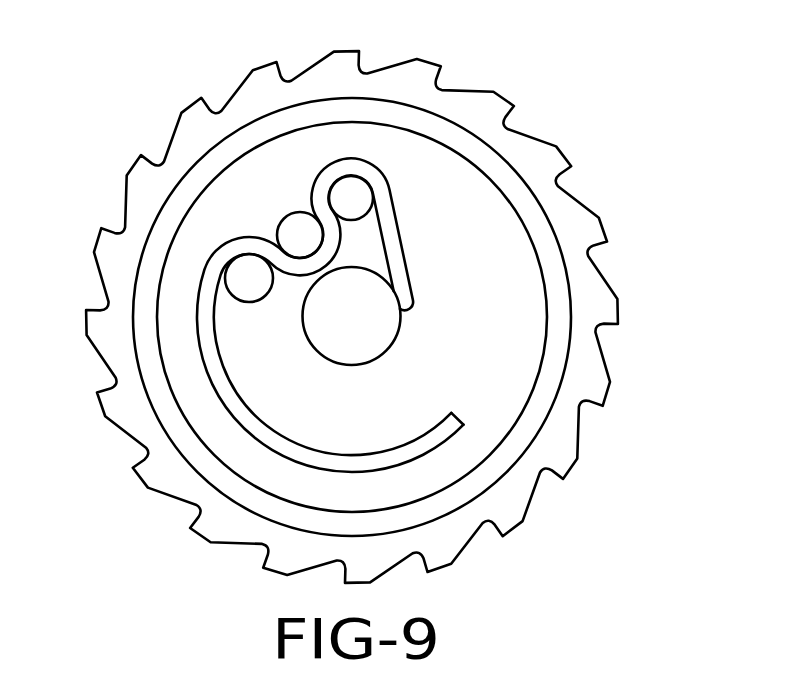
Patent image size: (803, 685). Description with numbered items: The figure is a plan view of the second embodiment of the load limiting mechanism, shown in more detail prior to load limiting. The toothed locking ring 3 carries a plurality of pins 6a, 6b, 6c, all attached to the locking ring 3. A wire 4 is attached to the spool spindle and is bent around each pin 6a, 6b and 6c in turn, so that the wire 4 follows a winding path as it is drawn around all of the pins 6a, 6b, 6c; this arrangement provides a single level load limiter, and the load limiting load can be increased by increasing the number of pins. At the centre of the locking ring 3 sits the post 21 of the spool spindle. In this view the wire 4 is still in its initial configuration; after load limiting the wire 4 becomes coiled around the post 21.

The locking ring 3 is at (481, 116).
The wire 4 is at (230, 391).
The pin 6a is at (245, 272).
The pin 6b is at (297, 230).
The pin 6c is at (347, 190).
The post of the spool spindle 21 is at (365, 342).